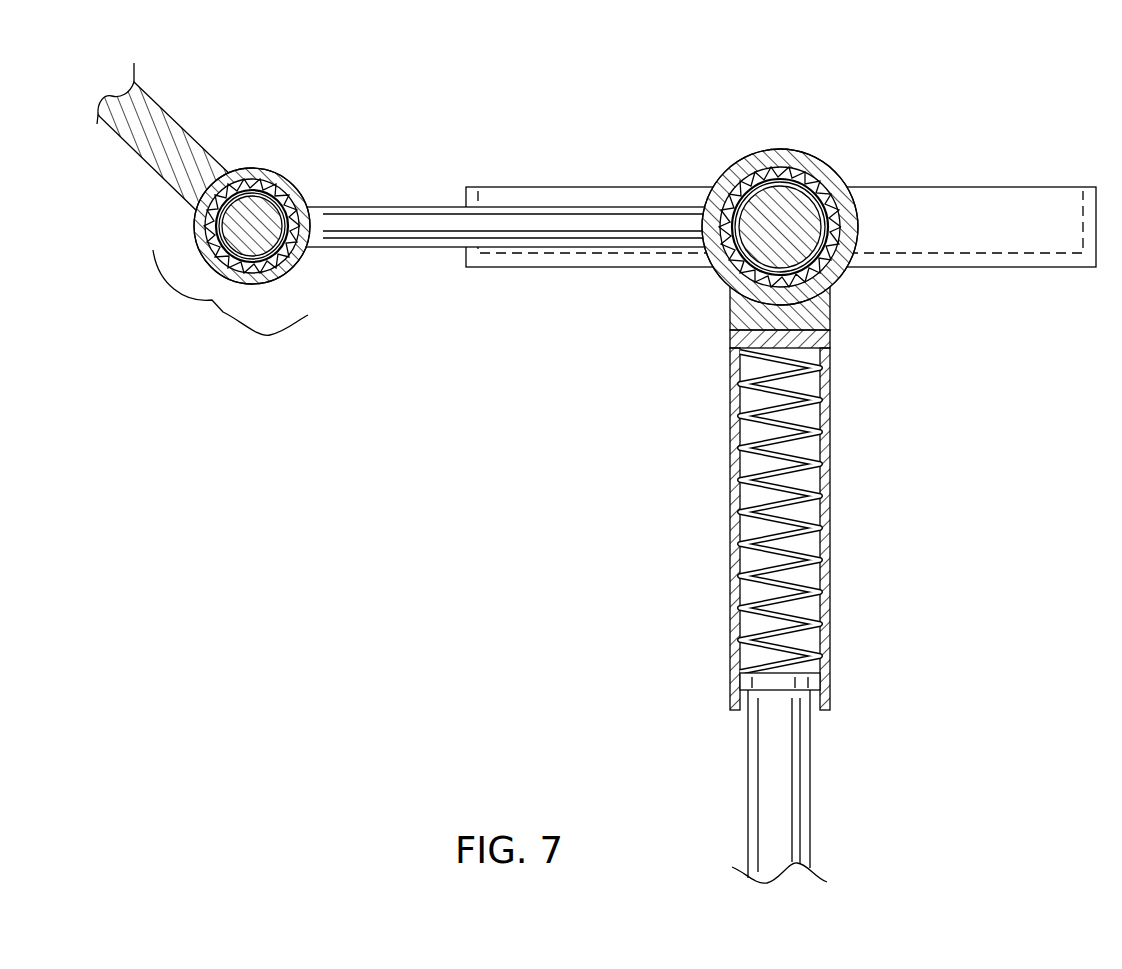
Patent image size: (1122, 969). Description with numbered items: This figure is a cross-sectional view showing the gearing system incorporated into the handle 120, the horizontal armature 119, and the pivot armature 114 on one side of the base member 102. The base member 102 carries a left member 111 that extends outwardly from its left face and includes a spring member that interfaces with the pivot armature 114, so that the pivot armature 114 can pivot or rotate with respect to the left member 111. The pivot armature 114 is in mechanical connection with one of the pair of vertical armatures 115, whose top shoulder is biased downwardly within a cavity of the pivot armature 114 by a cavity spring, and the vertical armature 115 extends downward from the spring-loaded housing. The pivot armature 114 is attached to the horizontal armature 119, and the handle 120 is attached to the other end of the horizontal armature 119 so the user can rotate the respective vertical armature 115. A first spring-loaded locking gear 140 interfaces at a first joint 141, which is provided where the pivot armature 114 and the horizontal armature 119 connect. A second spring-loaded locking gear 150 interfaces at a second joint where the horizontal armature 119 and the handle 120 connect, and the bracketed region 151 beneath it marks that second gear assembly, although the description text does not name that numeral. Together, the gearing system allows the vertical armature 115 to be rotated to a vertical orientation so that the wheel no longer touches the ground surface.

The base member 102 is at (1097, 209).
The left member 111 is at (797, 227).
The pivot armature 114 is at (830, 518).
The vertical armature 115 is at (810, 793).
The horizontal armature 119 is at (400, 206).
The handle member 120 is at (191, 140).
The first spring-loaded locking gear 140 is at (787, 222).
The first joint 141 is at (727, 262).
The second spring-loaded locking gear 150 is at (262, 168).
The bearing assembly 151 is at (230, 305).